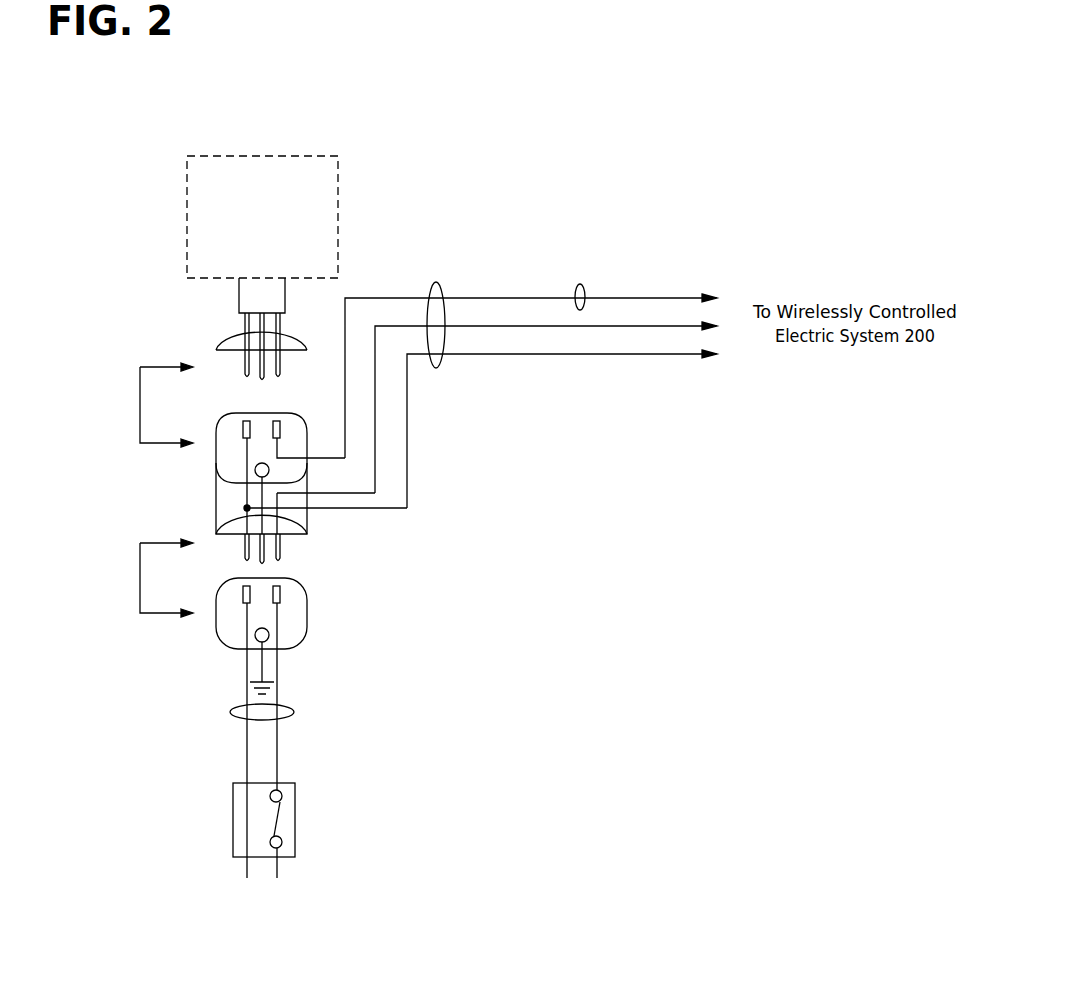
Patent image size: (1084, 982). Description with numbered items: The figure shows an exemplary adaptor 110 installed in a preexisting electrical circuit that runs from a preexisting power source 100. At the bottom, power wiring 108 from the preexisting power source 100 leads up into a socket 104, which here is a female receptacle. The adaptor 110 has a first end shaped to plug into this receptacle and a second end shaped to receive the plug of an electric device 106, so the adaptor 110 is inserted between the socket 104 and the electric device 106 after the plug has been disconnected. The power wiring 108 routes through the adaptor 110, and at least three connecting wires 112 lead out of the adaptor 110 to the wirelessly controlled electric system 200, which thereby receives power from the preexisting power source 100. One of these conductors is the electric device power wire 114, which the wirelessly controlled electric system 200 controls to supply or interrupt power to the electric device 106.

The electric device 106 is at (353, 163).
The adaptor 110 is at (320, 525).
The connecting wires 112 is at (443, 388).
The electric device power wire 114 is at (580, 285).
The socket 104 is at (328, 622).
The power wiring 108 is at (328, 705).
The wirelessly controlled electric system 200 is at (327, 805).
The preexisting power source 100 is at (327, 903).